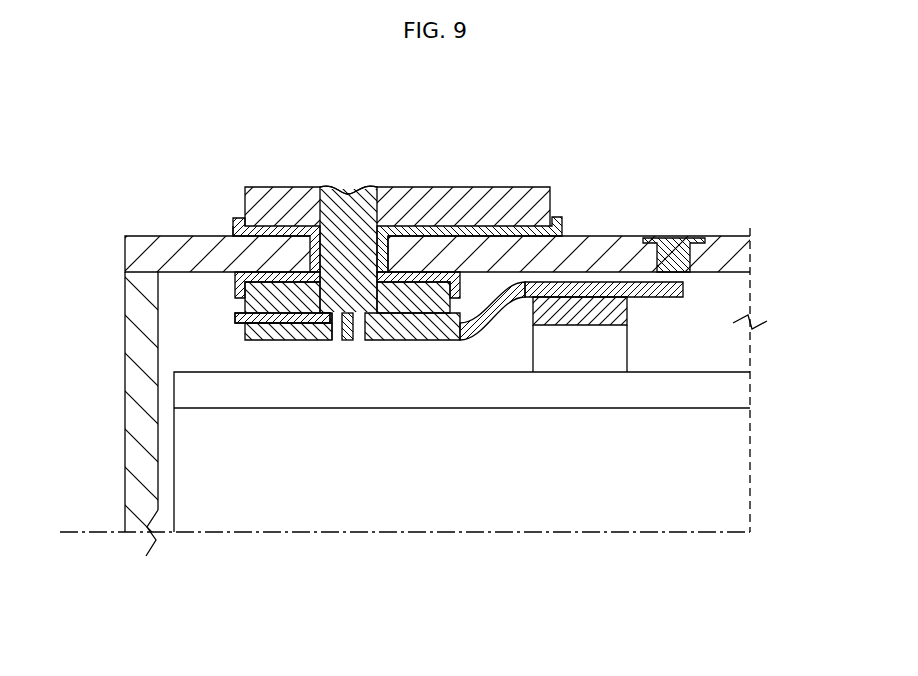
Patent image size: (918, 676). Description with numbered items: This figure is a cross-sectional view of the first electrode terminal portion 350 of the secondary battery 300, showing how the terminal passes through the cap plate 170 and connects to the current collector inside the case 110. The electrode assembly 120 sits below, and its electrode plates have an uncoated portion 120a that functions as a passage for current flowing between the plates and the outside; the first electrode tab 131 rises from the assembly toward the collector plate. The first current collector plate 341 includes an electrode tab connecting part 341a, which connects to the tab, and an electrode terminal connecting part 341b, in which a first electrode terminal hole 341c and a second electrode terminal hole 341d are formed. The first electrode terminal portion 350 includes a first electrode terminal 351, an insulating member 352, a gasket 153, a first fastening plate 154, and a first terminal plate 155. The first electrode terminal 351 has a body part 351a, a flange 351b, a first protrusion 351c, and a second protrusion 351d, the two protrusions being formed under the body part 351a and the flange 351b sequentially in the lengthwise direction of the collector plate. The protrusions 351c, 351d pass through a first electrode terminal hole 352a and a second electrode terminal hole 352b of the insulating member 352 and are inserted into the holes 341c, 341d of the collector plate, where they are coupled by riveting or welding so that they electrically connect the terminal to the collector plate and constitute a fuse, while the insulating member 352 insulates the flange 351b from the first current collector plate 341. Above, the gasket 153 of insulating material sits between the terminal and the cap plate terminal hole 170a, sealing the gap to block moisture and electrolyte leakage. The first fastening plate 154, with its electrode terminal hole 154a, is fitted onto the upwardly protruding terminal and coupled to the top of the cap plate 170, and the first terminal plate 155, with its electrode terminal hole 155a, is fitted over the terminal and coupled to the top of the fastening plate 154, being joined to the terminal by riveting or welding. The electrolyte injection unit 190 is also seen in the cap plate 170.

The secondary battery 300 is at (56, 94).
The case 110 is at (132, 343).
The electrode assembly 120 is at (743, 457).
The uncoated portion 120a is at (747, 390).
The first electrode tab 131 is at (503, 341).
The gasket 153 is at (234, 277).
The first fastening plate 154 is at (240, 226).
The electrode terminal hole 154a is at (233, 232).
The first terminal plate 155 is at (256, 193).
The electrode terminal hole 155a is at (322, 196).
The cap plate 170 is at (135, 255).
The cap plate terminal hole 170a is at (293, 262).
The electrolyte injection unit 190 is at (672, 240).
The first current collector plate 341 is at (395, 132).
The electrode tab connecting part 341a is at (583, 288).
The electrode terminal connecting part 341b is at (517, 300).
The first electrode terminal hole 341c is at (433, 280).
The second electrode terminal hole 341d is at (318, 313).
The first electrode terminal portion 350 is at (357, 140).
The first electrode terminal 351 is at (462, 616).
The body part 351a is at (355, 320).
The flange 351b is at (444, 325).
The first protrusion 351c is at (357, 247).
The second protrusion 351d is at (337, 320).
The insulating member 352 is at (233, 321).
The first electrode terminal hole 352a is at (290, 327).
The second electrode terminal hole 352b is at (324, 320).